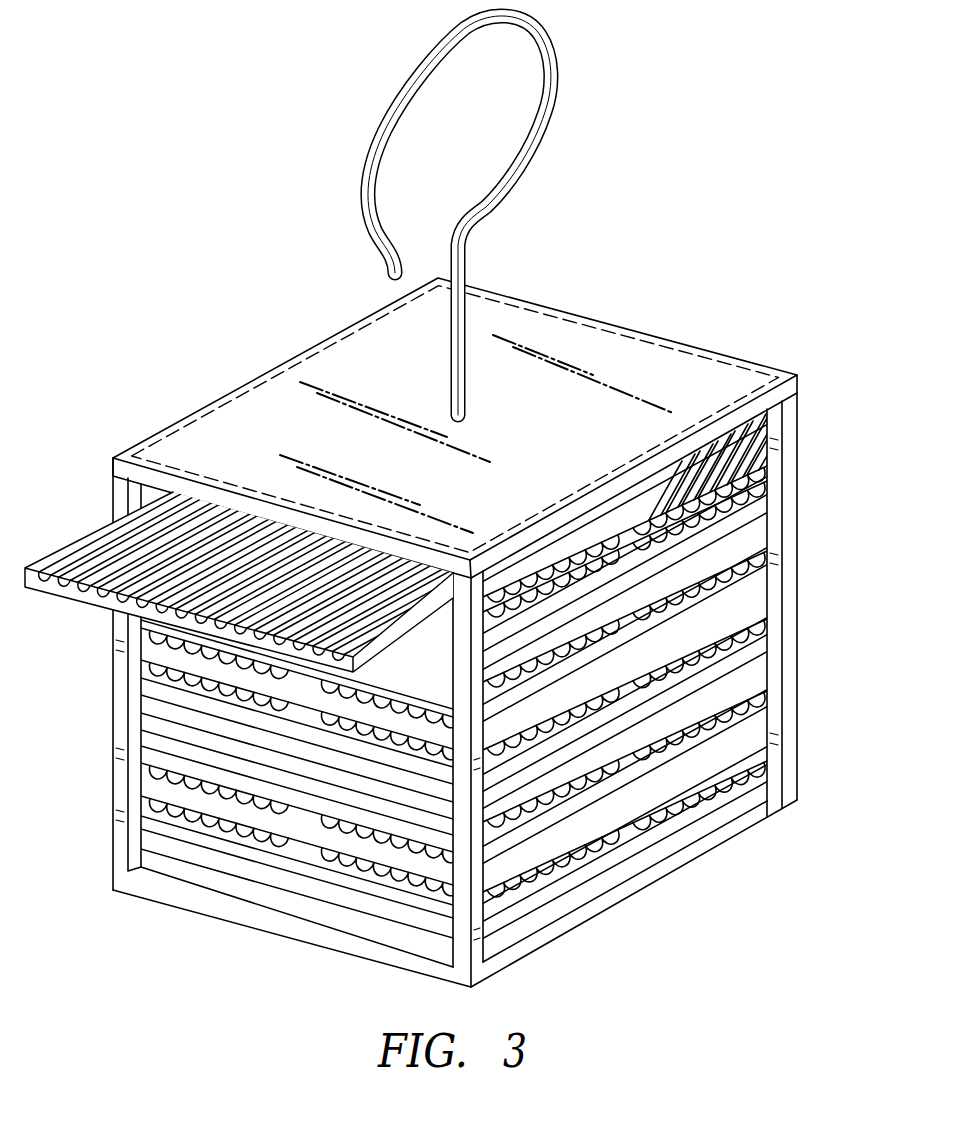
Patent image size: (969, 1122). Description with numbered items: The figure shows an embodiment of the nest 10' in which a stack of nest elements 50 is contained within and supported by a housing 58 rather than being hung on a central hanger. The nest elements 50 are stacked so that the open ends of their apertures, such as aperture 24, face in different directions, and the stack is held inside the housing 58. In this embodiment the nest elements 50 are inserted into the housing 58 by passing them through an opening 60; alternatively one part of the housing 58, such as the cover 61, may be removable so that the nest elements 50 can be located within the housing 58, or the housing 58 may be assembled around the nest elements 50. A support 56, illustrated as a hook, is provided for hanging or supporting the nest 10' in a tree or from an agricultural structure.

The nest 10' is at (437, 501).
The aperture 24 is at (73, 593).
The nest element 50 is at (772, 508).
The support 56 is at (556, 99).
The housing 58 is at (120, 733).
The opening 60 is at (134, 504).
The cover 61 is at (568, 358).